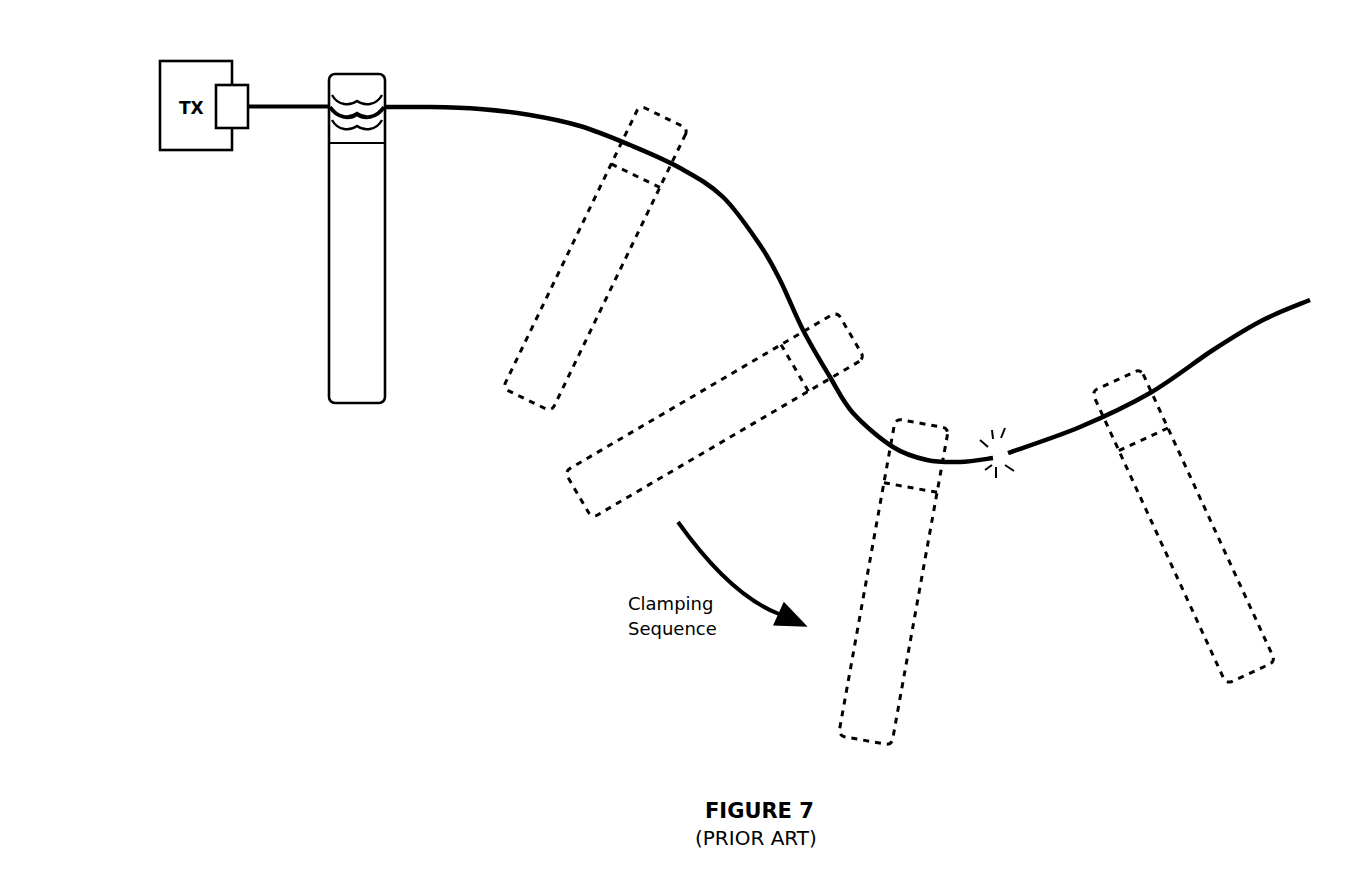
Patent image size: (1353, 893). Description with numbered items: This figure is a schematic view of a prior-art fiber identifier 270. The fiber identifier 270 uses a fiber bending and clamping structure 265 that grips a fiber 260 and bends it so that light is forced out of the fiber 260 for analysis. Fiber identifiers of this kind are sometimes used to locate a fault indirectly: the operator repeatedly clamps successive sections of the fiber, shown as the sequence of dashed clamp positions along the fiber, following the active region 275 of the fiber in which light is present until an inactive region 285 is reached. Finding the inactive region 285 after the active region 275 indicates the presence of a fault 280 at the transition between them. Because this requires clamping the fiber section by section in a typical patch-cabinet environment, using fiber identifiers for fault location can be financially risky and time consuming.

The fiber 260 is at (280, 100).
The fiber bending and clamping structure 265 is at (353, 88).
The fiber identifier 270 is at (353, 410).
The active region 275 is at (972, 423).
The fault 280 is at (995, 490).
The inactive region 285 is at (1285, 297).